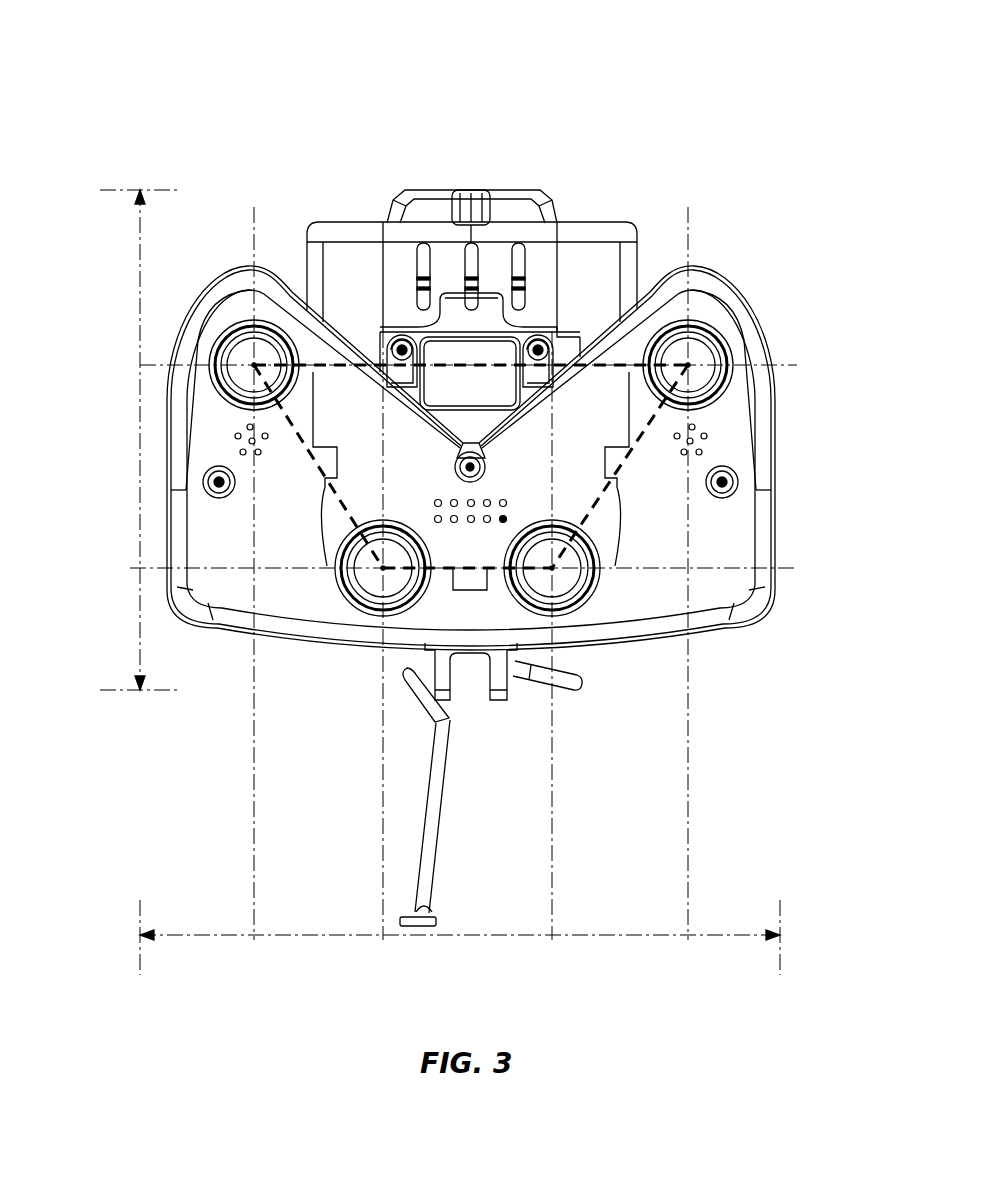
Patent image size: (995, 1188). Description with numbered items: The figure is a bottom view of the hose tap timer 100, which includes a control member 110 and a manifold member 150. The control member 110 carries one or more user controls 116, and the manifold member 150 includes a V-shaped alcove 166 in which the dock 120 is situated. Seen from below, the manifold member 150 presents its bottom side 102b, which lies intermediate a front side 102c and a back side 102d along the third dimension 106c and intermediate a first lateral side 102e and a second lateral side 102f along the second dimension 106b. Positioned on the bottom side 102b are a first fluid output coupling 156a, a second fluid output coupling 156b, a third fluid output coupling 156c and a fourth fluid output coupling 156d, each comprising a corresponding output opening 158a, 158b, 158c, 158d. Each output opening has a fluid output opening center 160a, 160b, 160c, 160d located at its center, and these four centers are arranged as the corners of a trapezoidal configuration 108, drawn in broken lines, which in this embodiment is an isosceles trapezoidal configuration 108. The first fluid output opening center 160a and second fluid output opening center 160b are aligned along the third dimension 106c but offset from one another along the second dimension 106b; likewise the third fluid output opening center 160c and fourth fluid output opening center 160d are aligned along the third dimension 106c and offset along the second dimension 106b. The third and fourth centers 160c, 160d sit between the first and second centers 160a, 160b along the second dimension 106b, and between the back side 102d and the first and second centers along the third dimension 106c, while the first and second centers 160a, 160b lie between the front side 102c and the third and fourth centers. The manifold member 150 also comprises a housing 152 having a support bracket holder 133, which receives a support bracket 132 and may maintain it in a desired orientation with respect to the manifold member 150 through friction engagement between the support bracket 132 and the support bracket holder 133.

The hose tap timer 100 is at (234, 98).
The control member 110 is at (533, 122).
The user controls 116 is at (445, 188).
The dock 120 is at (607, 262).
The V-shaped alcove 166 is at (477, 343).
The manifold member 150 is at (768, 566).
The housing 152 is at (773, 387).
The bottom side 102b is at (725, 458).
The front side 102c is at (274, 268).
The back side 102d is at (247, 632).
The first lateral side 102e is at (773, 398).
The second lateral side 102f is at (175, 568).
The second dimension 106b is at (350, 940).
The third dimension 106c is at (140, 418).
The trapezoidal configuration 108 is at (623, 463).
The first fluid output coupling 156a is at (200, 328).
The second fluid output coupling 156b is at (672, 313).
The third fluid output coupling 156c is at (352, 600).
The fourth fluid output coupling 156d is at (600, 586).
The first output opening 158a is at (248, 347).
The second output opening 158b is at (704, 357).
The third output opening 158c is at (367, 582).
The fourth output opening 158d is at (577, 583).
The first fluid output opening center 160a is at (255, 365).
The second fluid output opening center 160b is at (688, 363).
The third fluid output opening center 160c is at (367, 587).
The fourth fluid output opening center 160d is at (560, 568).
The support bracket 132 is at (438, 820).
The support bracket holder 133 is at (493, 702).